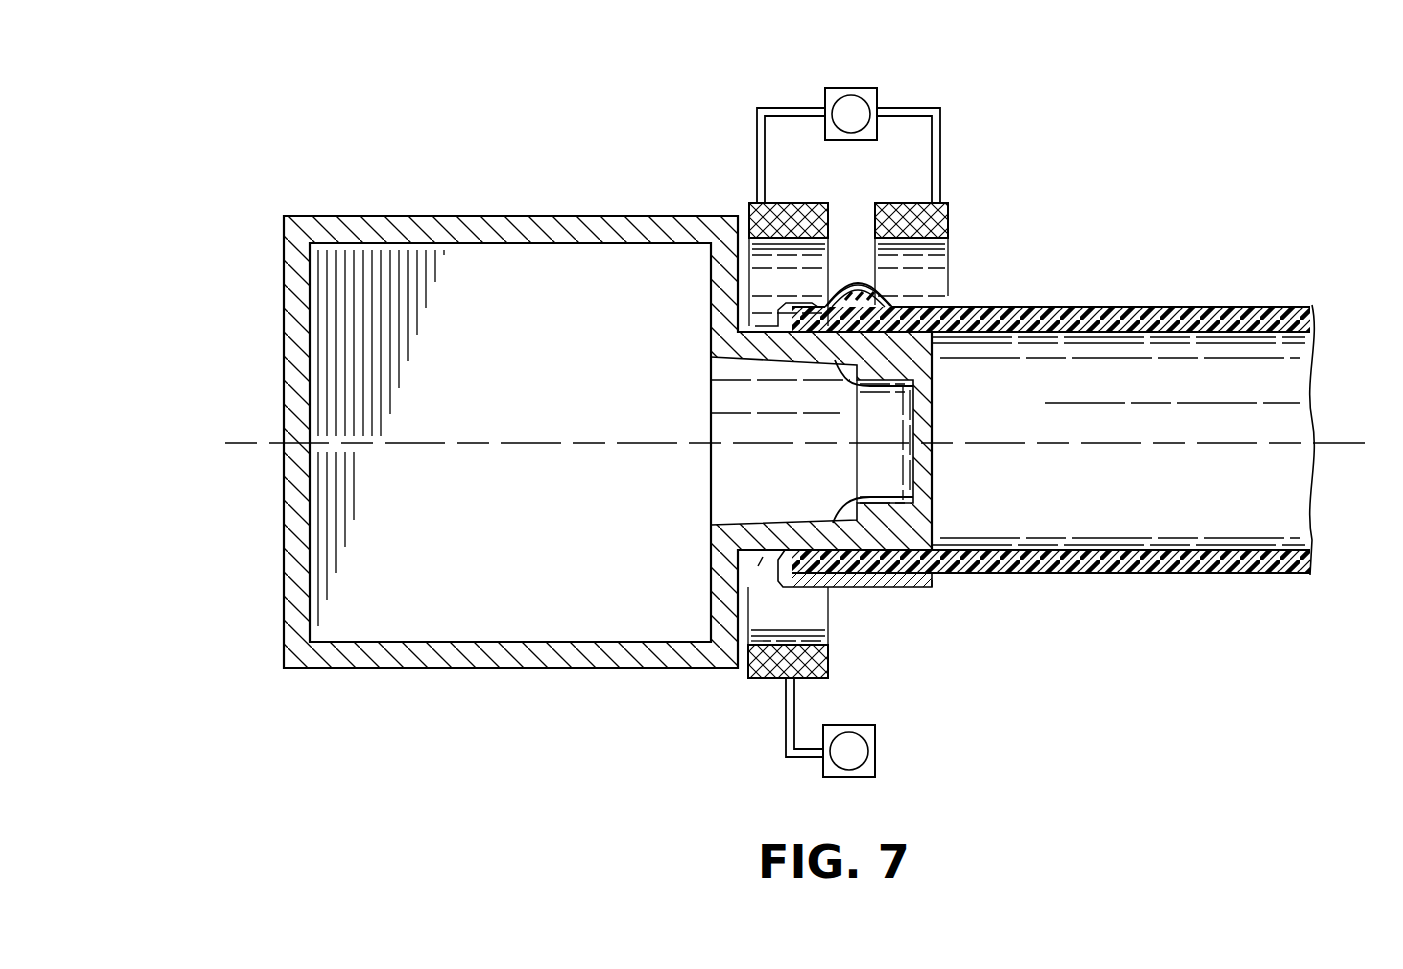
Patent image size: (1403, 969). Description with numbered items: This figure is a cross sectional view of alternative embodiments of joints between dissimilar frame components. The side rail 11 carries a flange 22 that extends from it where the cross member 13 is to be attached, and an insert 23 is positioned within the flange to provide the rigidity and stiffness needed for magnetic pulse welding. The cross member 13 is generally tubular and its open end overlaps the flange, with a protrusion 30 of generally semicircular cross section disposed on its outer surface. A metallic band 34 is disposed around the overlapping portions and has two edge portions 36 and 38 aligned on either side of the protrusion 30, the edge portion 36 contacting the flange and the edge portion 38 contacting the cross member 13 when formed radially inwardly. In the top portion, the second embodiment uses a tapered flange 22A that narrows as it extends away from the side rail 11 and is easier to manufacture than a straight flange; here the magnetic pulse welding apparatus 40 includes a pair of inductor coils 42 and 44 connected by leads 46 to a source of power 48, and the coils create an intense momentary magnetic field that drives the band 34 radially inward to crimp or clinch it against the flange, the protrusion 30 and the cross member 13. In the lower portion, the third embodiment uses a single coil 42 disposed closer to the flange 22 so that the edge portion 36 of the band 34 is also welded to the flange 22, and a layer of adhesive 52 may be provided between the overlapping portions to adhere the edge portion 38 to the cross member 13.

The side rail 11 is at (448, 217).
The cross member 13 is at (1217, 308).
The flange 22 is at (928, 492).
The tapered flange 22A is at (855, 388).
The insert 23 is at (930, 433).
The protrusion 30 is at (858, 300).
The metallic band 34 is at (890, 298).
The edge portion 36 is at (758, 566).
The edge portion 38 is at (918, 597).
The magnetic pulse welding apparatus 40 is at (953, 100).
The inductor coil 42 is at (750, 208).
The inductor coil 44 is at (947, 213).
The leads 46 is at (777, 108).
The source of power 48 is at (867, 90).
The layer of adhesive 52 is at (932, 577).